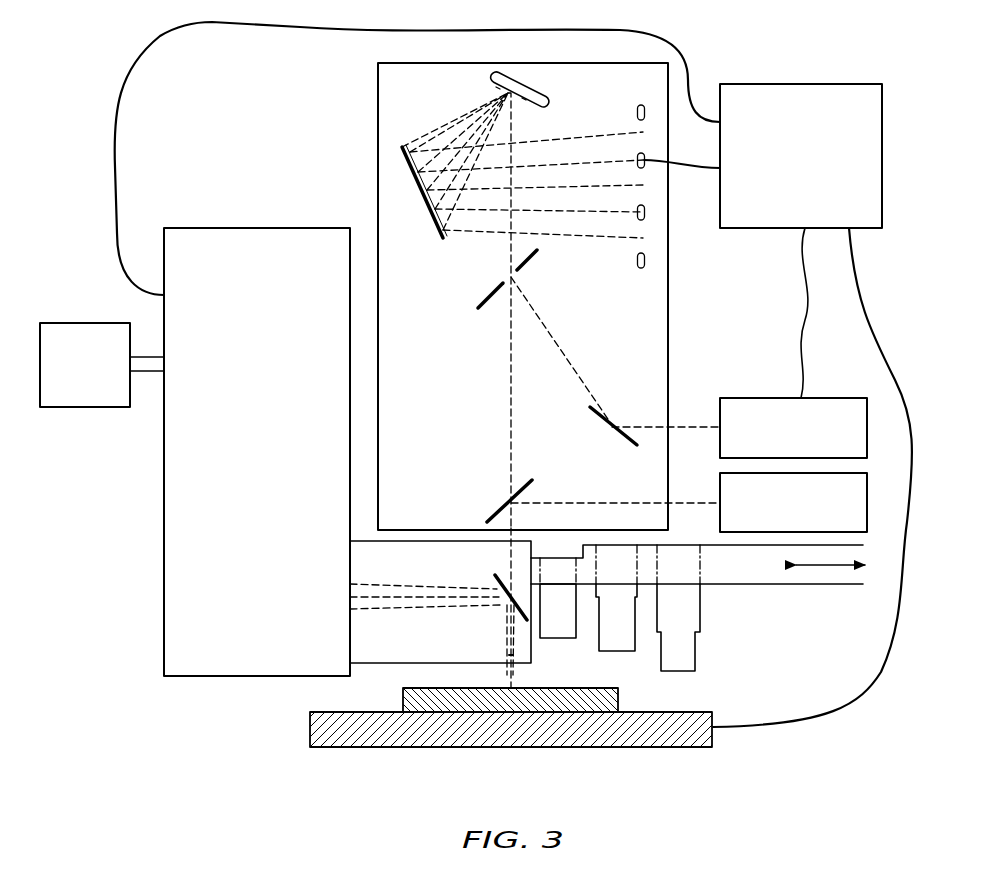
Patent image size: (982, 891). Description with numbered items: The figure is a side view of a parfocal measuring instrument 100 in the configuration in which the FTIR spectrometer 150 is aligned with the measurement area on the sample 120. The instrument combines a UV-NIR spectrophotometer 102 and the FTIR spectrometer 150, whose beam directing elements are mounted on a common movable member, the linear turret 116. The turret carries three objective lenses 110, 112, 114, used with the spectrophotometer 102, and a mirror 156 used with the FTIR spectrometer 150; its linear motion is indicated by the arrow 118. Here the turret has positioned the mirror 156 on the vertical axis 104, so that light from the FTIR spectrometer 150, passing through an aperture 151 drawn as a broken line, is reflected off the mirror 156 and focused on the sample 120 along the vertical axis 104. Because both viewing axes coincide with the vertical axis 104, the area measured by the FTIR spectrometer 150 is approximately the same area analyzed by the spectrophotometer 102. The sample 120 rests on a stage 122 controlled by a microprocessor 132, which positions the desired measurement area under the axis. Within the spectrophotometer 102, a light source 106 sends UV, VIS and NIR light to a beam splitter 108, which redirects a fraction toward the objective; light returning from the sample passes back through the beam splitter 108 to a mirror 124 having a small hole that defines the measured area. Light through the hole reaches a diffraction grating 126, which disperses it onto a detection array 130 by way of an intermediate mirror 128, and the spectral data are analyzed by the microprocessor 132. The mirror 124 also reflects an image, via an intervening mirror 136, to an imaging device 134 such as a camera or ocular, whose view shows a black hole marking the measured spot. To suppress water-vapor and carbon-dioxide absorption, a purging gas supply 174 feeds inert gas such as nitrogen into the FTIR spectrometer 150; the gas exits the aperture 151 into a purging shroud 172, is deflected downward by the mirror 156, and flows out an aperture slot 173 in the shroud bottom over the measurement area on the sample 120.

The parfocal measuring instrument 100 is at (272, 115).
The UV-NIR spectrophotometer 102 is at (378, 170).
The vertical axis 104 is at (514, 652).
The light source 106 is at (793, 502).
The beam splitter 108 is at (498, 510).
The objective lens 110 is at (558, 598).
The objective lens 112 is at (616, 598).
The objective lens 114 is at (678, 608).
The linear turret 116 is at (757, 586).
The arrow 118 is at (830, 567).
The sample 120 is at (618, 700).
The stage 122 is at (690, 748).
The mirror 124 is at (530, 262).
The diffraction grating 126 is at (548, 101).
The intermediate mirror 128 is at (403, 147).
The detection array 130 is at (641, 268).
The microprocessor 132 is at (801, 241).
The imaging device 134 is at (793, 428).
The intervening mirror 136 is at (598, 419).
The FTIR spectrometer 150 is at (205, 228).
The aperture 151 is at (345, 600).
The mirror 156 is at (494, 578).
The purging shroud 172 is at (440, 602).
The aperture slot 173 is at (495, 653).
The purging gas supply 174 is at (102, 365).